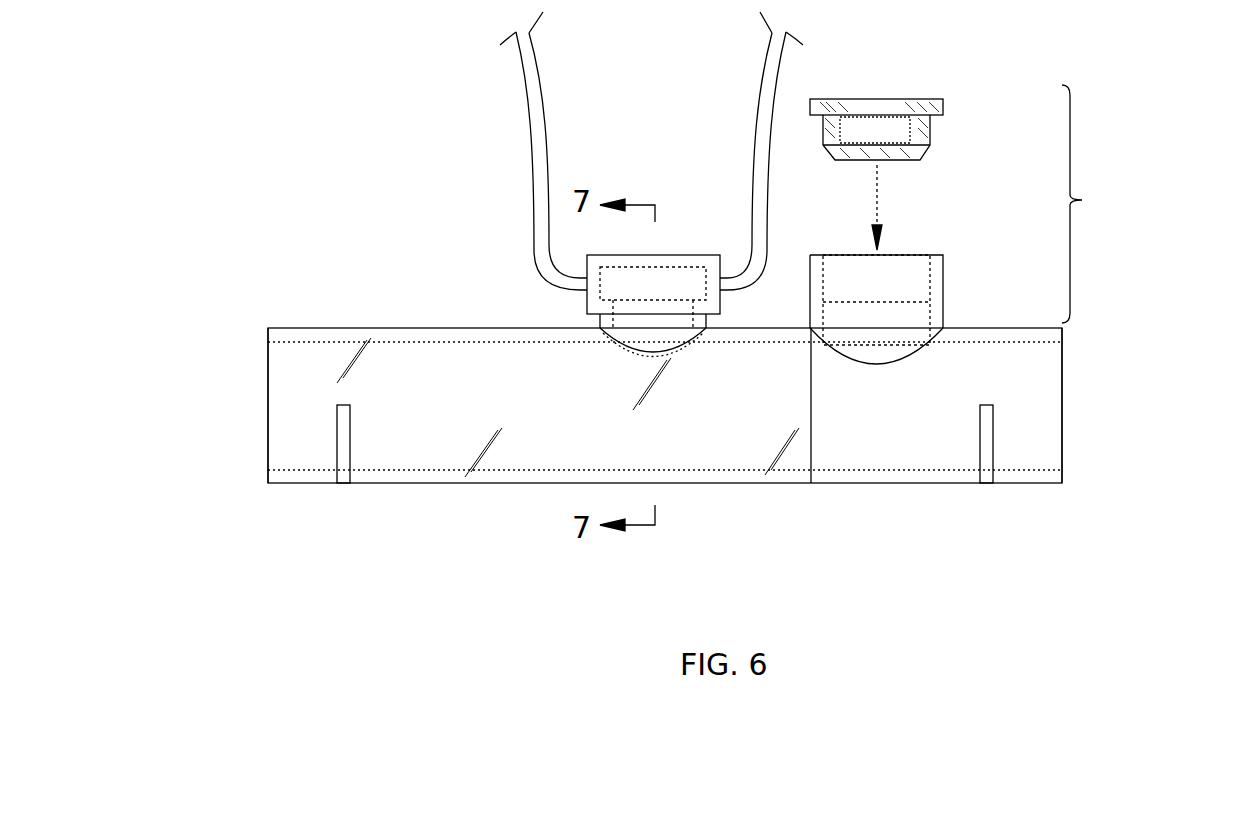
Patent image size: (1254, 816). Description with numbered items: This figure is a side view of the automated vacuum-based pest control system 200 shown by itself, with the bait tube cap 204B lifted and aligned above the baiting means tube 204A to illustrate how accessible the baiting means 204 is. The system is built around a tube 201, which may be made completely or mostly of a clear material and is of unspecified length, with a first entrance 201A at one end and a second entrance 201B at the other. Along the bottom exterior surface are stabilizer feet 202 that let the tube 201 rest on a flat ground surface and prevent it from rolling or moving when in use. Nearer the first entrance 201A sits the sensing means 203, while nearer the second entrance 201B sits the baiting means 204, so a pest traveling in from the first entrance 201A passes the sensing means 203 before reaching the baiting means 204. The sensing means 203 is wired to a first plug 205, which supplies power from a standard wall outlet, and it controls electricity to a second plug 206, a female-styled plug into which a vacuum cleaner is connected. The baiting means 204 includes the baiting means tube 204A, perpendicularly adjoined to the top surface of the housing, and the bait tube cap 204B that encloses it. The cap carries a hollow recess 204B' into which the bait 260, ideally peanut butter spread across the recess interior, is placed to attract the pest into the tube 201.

The automated vacuum-based pest control system 200 is at (280, 186).
The tube 201 is at (400, 328).
The first entrance 201A is at (268, 355).
The second entrance 201B is at (1063, 405).
The stabilizer foot 202 is at (345, 460).
The sensing means 203 is at (678, 275).
The baiting means 204 is at (1104, 204).
The baiting means tube 204A is at (943, 275).
The bait tube cap 204B is at (911, 139).
The hollow recess 204B' is at (823, 187).
The first plug 205 is at (534, 108).
The second plug 206 is at (752, 100).
The bait 260 is at (880, 128).